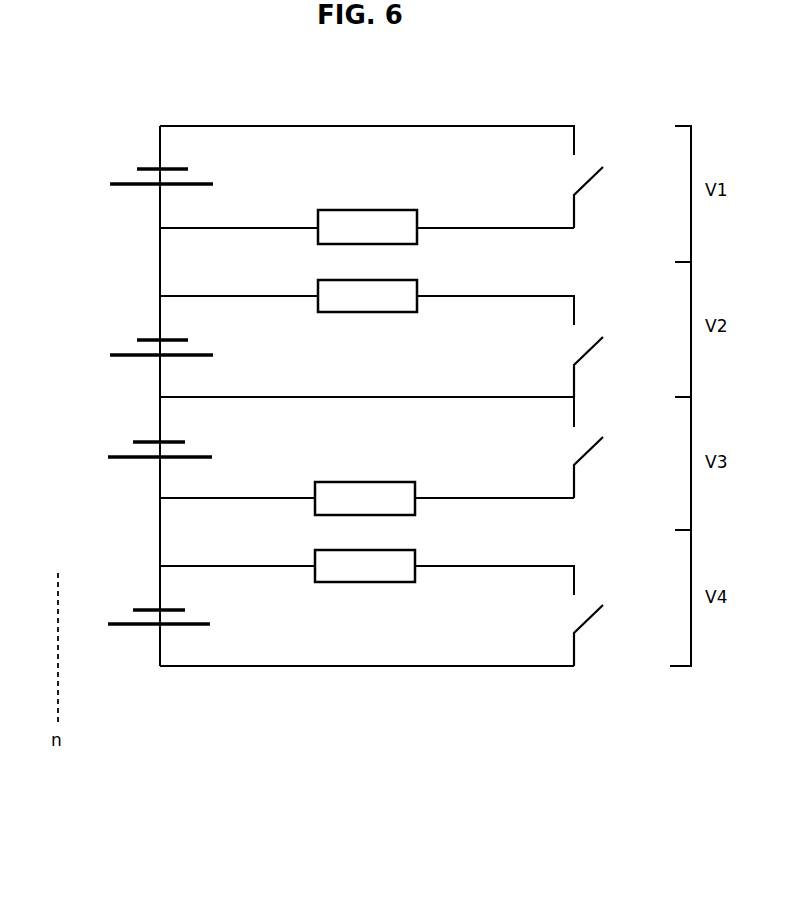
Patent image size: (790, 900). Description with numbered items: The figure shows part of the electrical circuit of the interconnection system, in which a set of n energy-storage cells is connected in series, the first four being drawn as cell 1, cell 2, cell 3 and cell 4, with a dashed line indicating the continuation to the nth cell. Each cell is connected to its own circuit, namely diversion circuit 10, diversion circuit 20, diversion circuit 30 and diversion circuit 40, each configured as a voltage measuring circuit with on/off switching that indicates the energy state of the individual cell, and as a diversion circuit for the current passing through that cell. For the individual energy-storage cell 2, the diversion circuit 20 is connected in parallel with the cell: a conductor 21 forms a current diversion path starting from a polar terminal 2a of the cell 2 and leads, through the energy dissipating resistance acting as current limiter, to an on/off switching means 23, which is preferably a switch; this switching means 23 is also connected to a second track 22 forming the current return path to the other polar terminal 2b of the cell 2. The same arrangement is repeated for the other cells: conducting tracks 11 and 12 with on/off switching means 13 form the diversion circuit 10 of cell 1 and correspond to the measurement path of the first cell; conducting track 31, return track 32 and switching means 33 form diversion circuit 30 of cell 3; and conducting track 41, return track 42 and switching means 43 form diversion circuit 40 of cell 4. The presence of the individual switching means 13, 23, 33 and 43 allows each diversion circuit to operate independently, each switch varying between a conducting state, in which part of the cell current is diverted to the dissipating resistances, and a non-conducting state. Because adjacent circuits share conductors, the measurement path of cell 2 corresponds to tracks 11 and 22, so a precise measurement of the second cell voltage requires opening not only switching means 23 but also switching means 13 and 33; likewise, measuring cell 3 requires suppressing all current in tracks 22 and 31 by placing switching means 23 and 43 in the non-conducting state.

The energy-storage cell 1 is at (108, 158).
The energy-storage cell 2 is at (135, 348).
The polar terminal 2a is at (159, 339).
The polar terminal 2b is at (159, 357).
The energy-storage cell 3 is at (108, 433).
The energy-storage cell 4 is at (106, 600).
The diversion circuit 10 is at (386, 163).
The conducting track 11 is at (232, 228).
The conducting track 12 is at (232, 126).
The on/off switching means 13 is at (586, 170).
The diversion circuit 20 is at (386, 324).
The conductor 21 is at (228, 296).
The second track 22 is at (232, 397).
The on/off switching means 23 is at (586, 340).
The diversion circuit 30 is at (386, 464).
The conducting track 31 is at (232, 498).
The current return track 32 is at (280, 398).
The on/off switching means 33 is at (586, 440).
The diversion circuit 40 is at (386, 593).
The conducting track 41 is at (228, 566).
The current return track 42 is at (232, 666).
The on/off switching means 43 is at (586, 608).